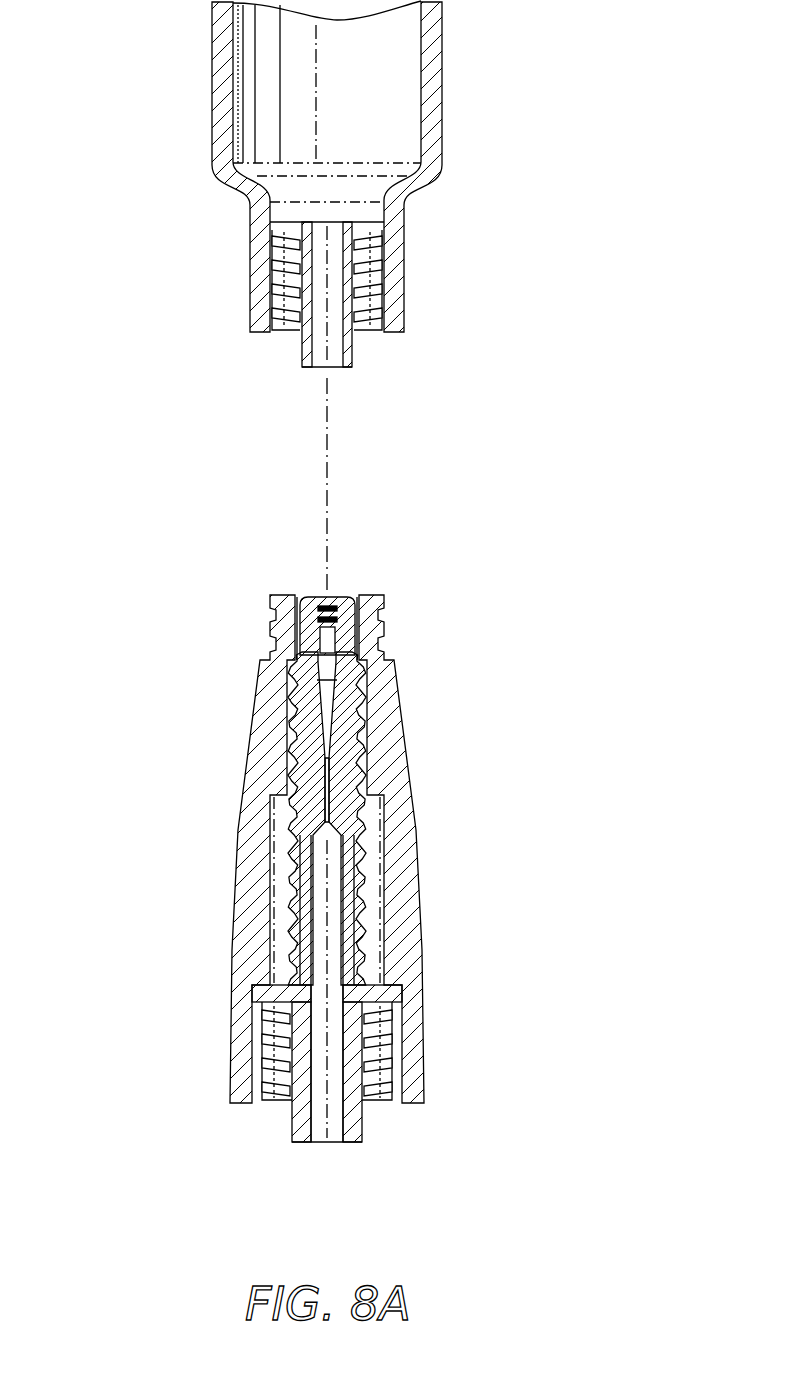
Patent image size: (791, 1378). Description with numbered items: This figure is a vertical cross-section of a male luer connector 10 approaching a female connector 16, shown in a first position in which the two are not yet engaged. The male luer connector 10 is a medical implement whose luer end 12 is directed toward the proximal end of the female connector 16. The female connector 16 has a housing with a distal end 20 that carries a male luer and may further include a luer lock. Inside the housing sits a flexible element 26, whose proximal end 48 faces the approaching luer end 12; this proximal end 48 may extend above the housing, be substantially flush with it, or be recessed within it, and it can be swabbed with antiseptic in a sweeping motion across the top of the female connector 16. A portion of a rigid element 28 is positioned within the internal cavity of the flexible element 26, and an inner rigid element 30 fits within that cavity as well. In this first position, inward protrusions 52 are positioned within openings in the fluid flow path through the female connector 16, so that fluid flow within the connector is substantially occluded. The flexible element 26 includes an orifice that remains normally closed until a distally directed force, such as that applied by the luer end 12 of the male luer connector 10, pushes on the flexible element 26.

The male luer connector 10 is at (168, 59).
The luer end 12 is at (300, 345).
The female connector 16 is at (453, 689).
The distal end 20 is at (278, 1120).
The flexible element 26 is at (292, 882).
The rigid element 28 is at (280, 985).
The inner rigid element 30 is at (360, 948).
The proximal end of flexible element 48 is at (340, 592).
The inward protrusions 52 is at (307, 790).